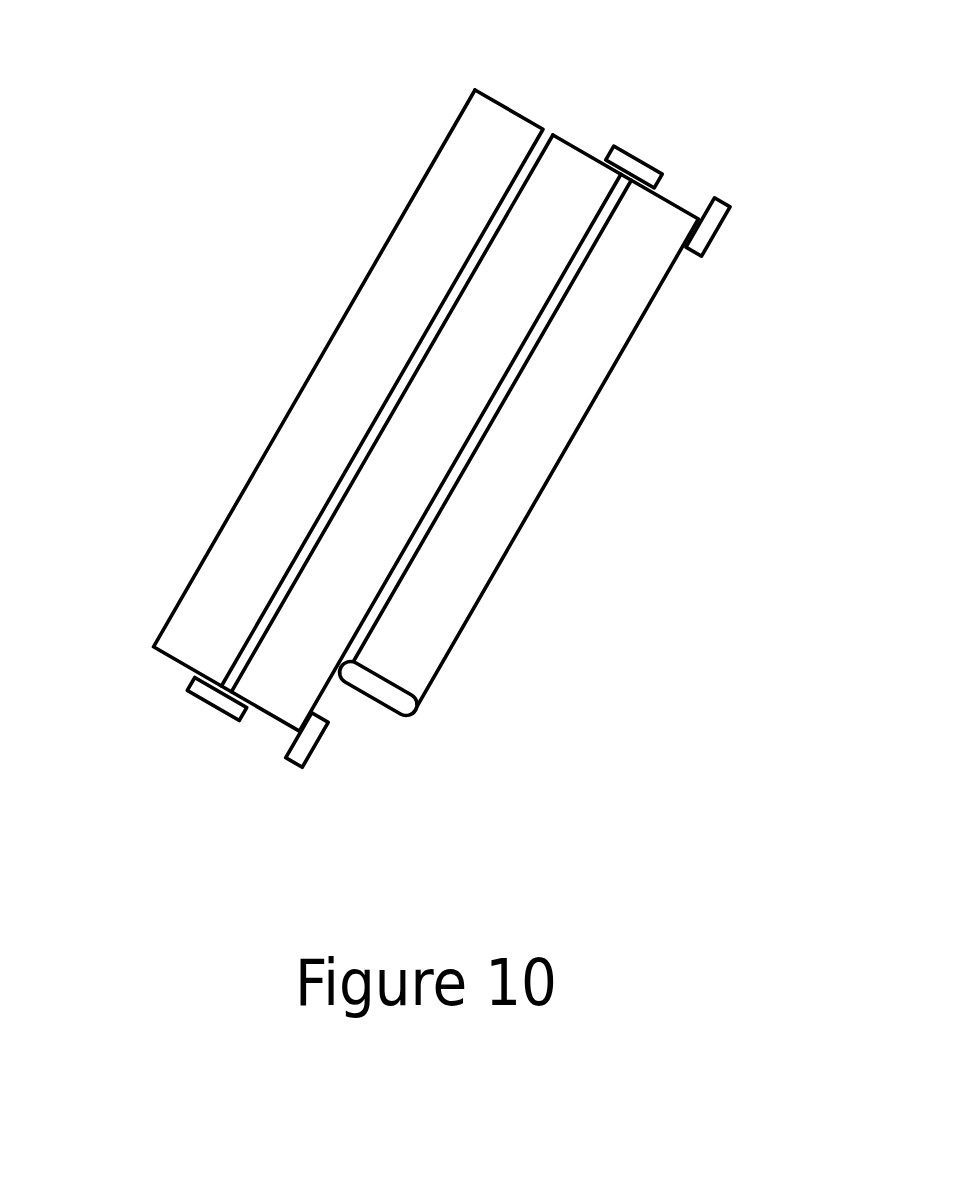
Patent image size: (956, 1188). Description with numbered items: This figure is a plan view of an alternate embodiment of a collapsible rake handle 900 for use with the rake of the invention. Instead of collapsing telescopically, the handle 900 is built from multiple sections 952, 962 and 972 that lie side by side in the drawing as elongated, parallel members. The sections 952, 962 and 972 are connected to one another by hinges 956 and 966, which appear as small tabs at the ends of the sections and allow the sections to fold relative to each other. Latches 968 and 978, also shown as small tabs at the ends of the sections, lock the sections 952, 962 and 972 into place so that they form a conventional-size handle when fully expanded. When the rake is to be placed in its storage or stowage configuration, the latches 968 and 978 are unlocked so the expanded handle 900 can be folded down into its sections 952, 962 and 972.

The rake handle 900 is at (183, 143).
The section 952 is at (331, 340).
The section 962 is at (574, 143).
The section 972 is at (557, 460).
The hinge 966 is at (658, 170).
The latch 978 is at (712, 238).
The hinge 956 is at (211, 710).
The latch 968 is at (310, 758).